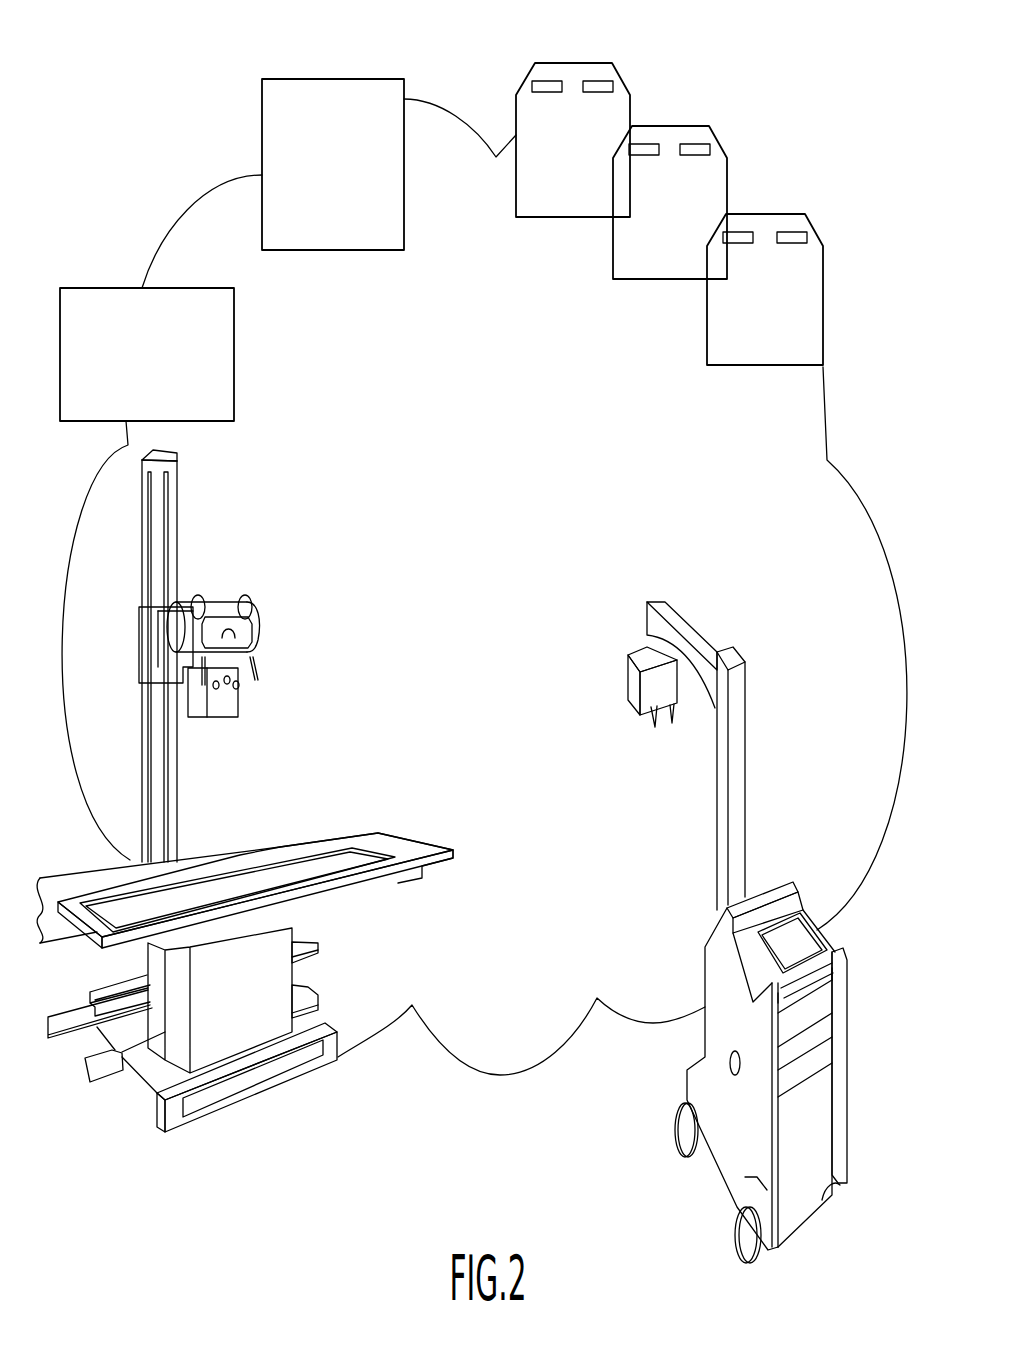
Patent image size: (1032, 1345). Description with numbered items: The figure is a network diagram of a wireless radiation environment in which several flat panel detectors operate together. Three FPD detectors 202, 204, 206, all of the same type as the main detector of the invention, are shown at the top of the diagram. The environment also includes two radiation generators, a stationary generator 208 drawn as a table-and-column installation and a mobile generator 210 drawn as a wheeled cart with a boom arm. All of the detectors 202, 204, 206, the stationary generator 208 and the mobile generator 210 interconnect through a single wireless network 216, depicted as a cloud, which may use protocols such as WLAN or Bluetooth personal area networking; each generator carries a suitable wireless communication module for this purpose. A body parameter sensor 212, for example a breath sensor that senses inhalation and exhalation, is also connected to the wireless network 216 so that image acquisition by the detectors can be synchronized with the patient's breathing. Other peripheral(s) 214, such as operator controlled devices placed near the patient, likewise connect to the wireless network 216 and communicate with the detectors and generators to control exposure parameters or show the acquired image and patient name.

The FPD detector 202 is at (632, 72).
The FPD detector 204 is at (732, 134).
The FPD detector 206 is at (828, 210).
The stationary generator 208 is at (315, 723).
The mobile generator 210 is at (782, 777).
The body parameter sensor 212 is at (330, 79).
The other peripheral(s) 214 is at (123, 288).
The wireless network 216 is at (458, 612).